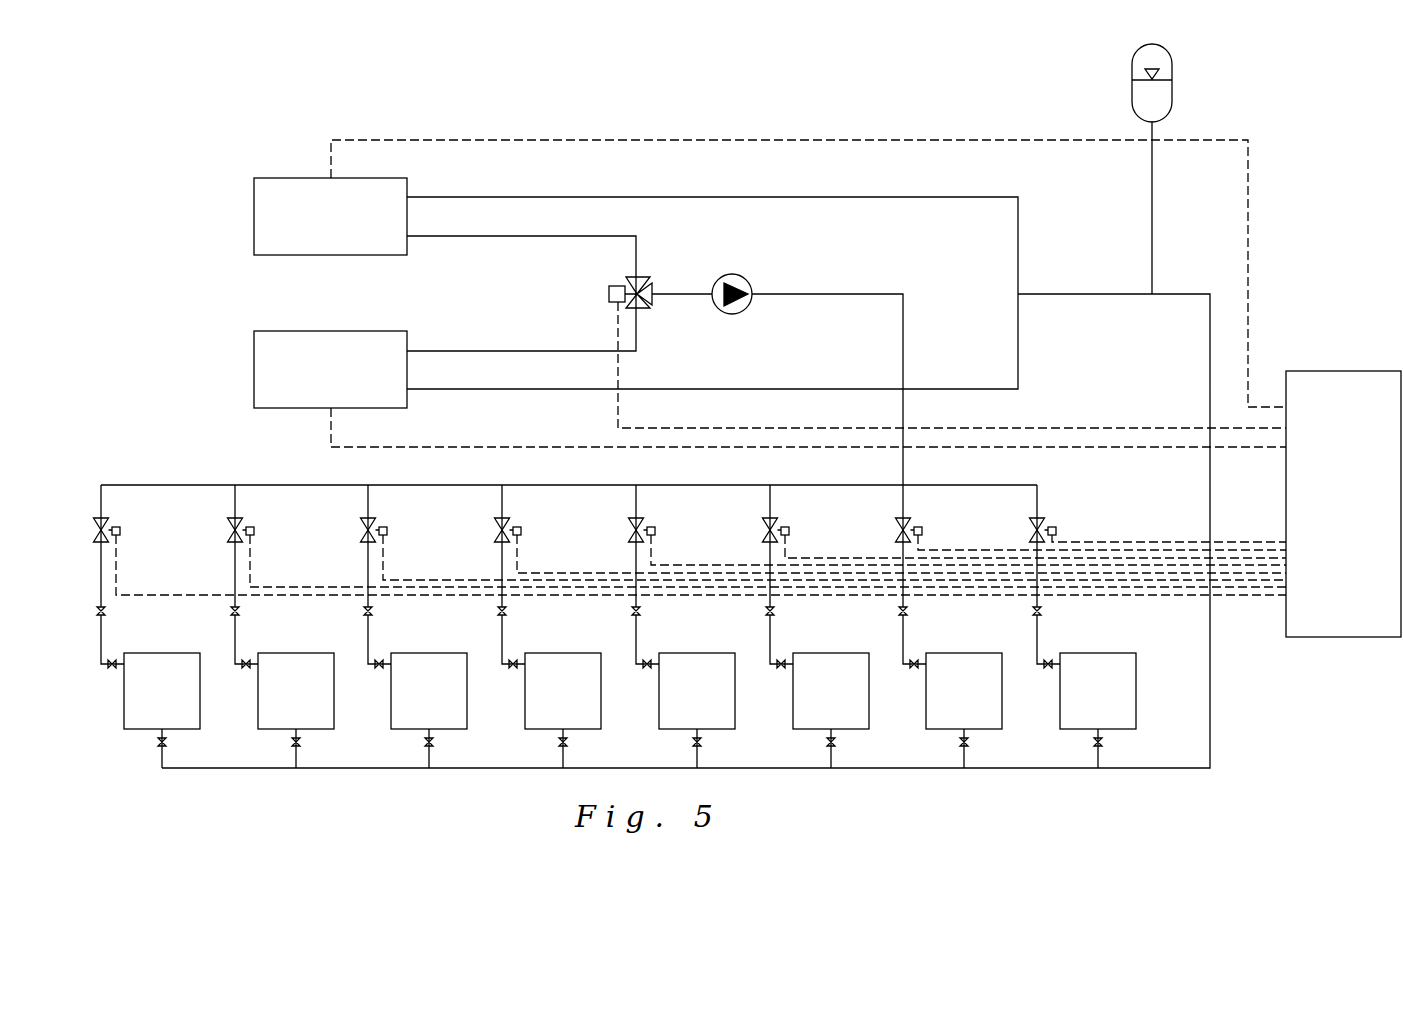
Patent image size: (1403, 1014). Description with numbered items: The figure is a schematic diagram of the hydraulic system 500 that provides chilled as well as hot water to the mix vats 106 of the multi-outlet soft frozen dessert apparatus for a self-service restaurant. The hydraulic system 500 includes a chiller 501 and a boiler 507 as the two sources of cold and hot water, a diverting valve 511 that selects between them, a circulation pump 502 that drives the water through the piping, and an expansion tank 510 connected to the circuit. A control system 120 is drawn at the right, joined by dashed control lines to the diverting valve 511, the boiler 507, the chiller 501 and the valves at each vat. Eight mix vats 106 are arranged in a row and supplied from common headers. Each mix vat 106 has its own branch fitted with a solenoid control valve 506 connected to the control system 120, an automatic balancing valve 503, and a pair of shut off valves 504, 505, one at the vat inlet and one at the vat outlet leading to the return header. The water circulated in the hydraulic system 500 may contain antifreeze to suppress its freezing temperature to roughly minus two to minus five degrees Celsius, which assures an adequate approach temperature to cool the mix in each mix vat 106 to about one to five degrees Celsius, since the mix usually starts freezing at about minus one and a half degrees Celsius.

The hydraulic system 500 is at (832, 118).
The boiler 507 is at (362, 177).
The chiller 501 is at (360, 344).
The diverting valve 511 is at (641, 277).
The circulation pump 502 is at (717, 302).
The expansion tank 510 is at (1173, 61).
The control system 120 is at (1313, 367).
The solenoid control valve 506 is at (690, 555).
The automatic balancing valve 503 is at (106, 613).
The shut off valve 505 is at (116, 661).
The mix vat 106 is at (193, 691).
The shut off valve 504 is at (165, 743).